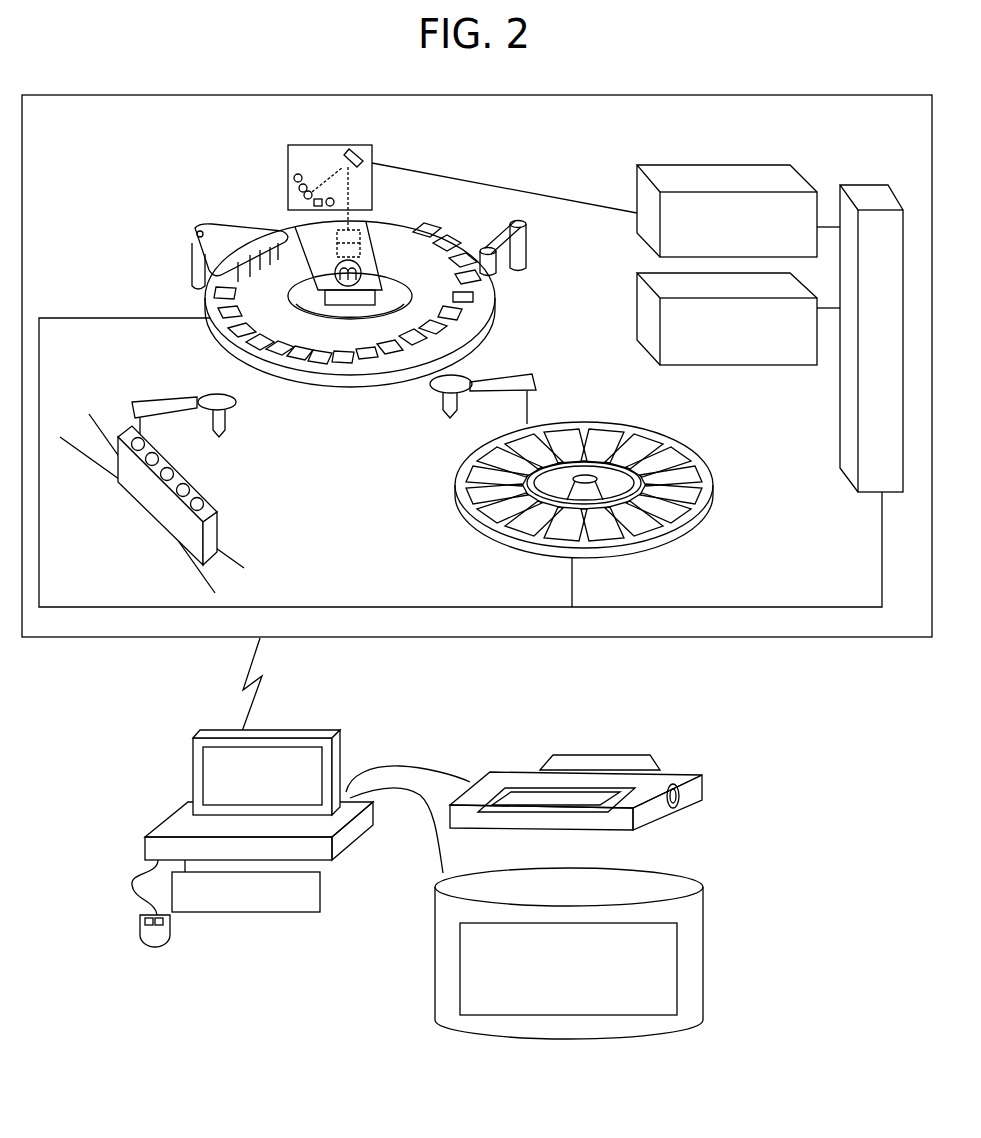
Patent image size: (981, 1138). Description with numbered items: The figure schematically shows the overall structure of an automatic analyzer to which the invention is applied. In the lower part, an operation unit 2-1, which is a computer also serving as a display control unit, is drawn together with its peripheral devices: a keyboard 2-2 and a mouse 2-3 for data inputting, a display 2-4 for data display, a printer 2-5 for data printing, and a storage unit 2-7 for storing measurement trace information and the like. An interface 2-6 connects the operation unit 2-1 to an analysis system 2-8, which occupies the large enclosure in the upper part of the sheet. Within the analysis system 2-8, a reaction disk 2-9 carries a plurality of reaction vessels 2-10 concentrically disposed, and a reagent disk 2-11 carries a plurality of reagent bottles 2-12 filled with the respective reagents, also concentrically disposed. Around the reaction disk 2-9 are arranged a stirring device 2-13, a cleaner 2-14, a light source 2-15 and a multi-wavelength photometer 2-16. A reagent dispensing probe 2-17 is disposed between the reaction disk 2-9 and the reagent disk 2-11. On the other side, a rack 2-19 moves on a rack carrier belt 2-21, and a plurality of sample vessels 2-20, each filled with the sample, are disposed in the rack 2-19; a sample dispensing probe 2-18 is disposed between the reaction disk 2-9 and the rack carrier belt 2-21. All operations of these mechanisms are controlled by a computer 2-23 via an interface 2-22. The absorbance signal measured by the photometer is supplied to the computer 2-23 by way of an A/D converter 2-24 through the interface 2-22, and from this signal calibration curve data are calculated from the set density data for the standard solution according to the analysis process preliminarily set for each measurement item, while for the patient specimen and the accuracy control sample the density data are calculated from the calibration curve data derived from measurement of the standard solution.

The operation unit 2-1 is at (193, 745).
The keyboard 2-2 is at (320, 893).
The mouse 2-3 is at (171, 932).
The display 2-4 is at (203, 777).
The printer 2-5 is at (703, 790).
The interface 2-6 is at (262, 680).
The storage unit 2-7 is at (704, 946).
The analysis system 2-8 is at (88, 640).
The reaction disk 2-9 is at (427, 229).
The reaction vessel 2-10 is at (434, 230).
The reagent disk 2-11 is at (712, 483).
The reagent bottle 2-12 is at (567, 527).
The stirring device 2-13 is at (528, 250).
The cleaner 2-14 is at (192, 243).
The light source 2-15 is at (362, 268).
The multi-wavelength photometer 2-16 is at (288, 168).
The reagent dispensing probe 2-17 is at (514, 376).
The sample dispensing probe 2-18 is at (180, 400).
The rack 2-19 is at (217, 527).
The sample vessel 2-20 is at (187, 483).
The rack carrier belt 2-21 is at (102, 463).
The interface 2-22 is at (860, 495).
The computer 2-23 is at (783, 366).
The A/D converter 2-24 is at (678, 170).